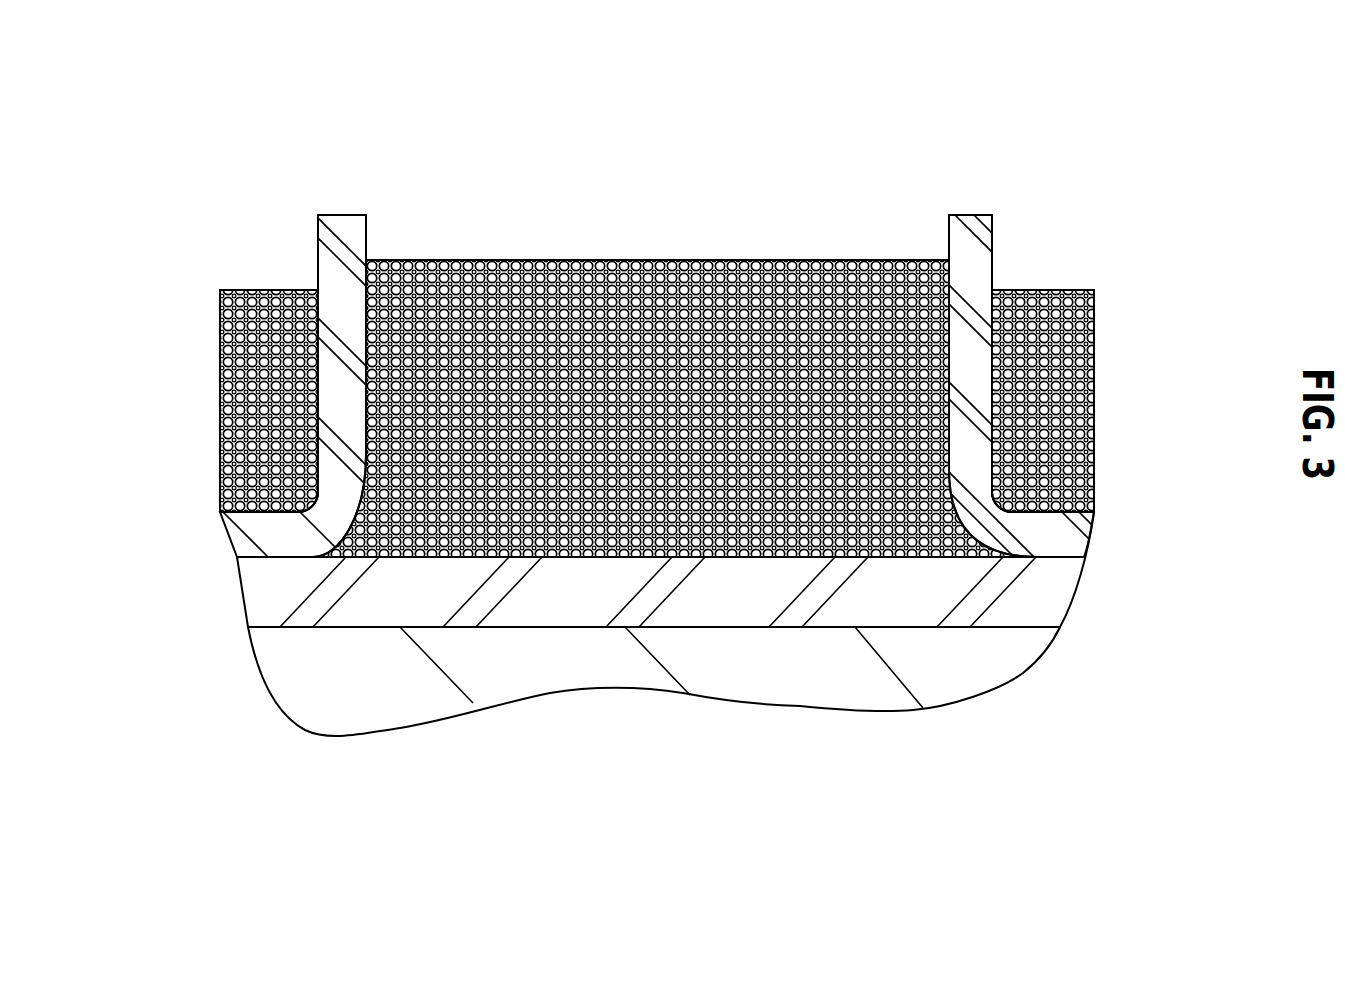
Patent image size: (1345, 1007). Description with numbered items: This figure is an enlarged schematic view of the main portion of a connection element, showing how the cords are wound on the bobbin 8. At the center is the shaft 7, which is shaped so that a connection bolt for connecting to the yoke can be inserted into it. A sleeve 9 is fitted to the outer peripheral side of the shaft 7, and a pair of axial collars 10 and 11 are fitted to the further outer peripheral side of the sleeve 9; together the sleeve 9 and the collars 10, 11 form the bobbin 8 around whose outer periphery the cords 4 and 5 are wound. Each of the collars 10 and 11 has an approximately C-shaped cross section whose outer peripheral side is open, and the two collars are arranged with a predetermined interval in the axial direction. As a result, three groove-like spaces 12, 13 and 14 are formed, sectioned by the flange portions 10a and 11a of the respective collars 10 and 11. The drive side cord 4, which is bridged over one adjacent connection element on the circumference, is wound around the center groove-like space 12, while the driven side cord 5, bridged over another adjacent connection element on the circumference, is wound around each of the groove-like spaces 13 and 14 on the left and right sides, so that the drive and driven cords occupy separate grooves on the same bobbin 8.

The drive side cord 4 is at (722, 307).
The driven side cord 5 is at (250, 322).
The shaft 7 is at (540, 672).
The bobbin 8 is at (383, 603).
The sleeve 9 is at (272, 600).
The collar 10 is at (247, 533).
The flange portion 10a is at (346, 215).
The collar 11 is at (1070, 535).
The flange portion 11a is at (968, 232).
The center groove-like space 12 is at (555, 555).
The groove-like space 13 is at (232, 467).
The groove-like space 14 is at (1078, 465).